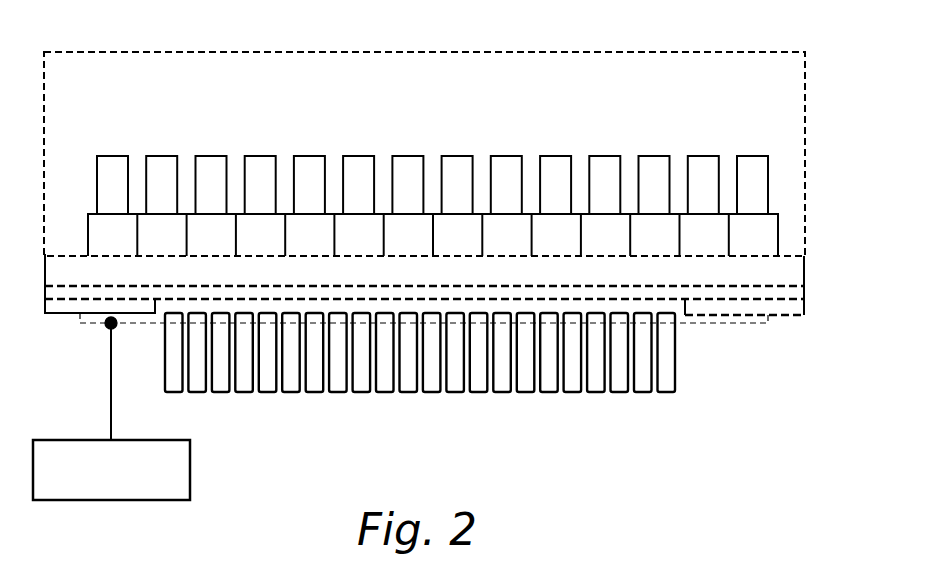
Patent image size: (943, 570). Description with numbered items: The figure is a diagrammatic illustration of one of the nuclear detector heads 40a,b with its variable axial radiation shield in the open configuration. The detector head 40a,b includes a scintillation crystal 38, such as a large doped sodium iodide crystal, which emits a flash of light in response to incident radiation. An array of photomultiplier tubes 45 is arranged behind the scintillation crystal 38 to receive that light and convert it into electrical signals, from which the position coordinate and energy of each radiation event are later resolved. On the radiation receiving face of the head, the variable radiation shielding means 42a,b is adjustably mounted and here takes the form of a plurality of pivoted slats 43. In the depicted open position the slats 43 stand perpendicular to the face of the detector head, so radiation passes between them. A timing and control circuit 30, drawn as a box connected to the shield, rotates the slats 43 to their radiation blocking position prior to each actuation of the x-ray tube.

The nuclear detector heads 40a,b is at (620, 95).
The photomultiplier tubes 45 is at (115, 163).
The scintillation crystal 38 is at (793, 273).
The pivoted slats 43 is at (362, 386).
The variable radiation shielding means 42a,b is at (740, 372).
The timing and control circuit 30 is at (108, 500).